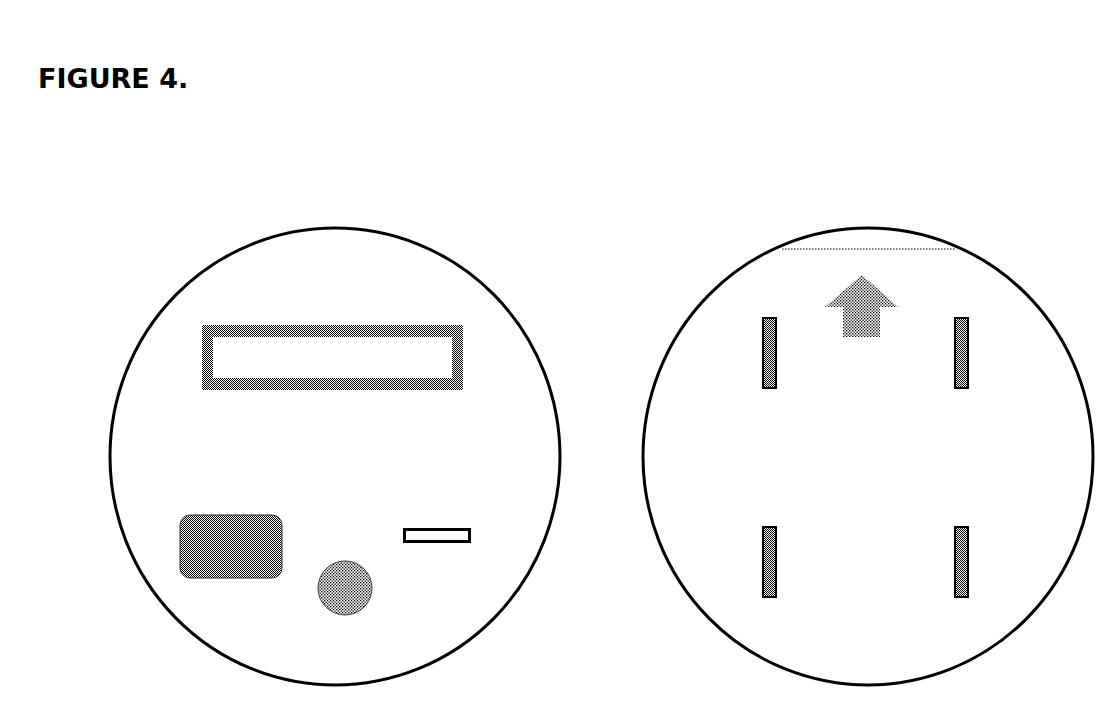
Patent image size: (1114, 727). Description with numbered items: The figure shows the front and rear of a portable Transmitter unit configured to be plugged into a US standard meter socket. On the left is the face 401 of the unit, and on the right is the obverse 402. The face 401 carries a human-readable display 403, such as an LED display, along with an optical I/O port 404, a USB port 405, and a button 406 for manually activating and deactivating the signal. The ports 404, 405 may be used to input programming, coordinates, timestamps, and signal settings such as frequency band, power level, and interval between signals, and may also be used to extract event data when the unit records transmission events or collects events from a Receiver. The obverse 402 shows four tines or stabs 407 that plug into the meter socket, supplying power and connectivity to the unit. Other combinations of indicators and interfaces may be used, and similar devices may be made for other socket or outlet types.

The face 401 is at (308, 202).
The obverse 402 is at (844, 202).
The human-readable display 403 is at (317, 314).
The optical I/O port 404 is at (196, 494).
The USB port 405 is at (409, 518).
The button 406 is at (381, 631).
The tines or stabs 407 is at (785, 335).